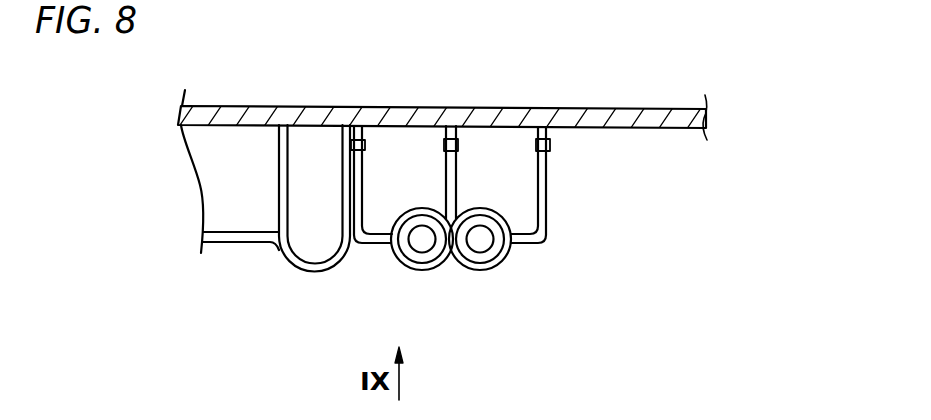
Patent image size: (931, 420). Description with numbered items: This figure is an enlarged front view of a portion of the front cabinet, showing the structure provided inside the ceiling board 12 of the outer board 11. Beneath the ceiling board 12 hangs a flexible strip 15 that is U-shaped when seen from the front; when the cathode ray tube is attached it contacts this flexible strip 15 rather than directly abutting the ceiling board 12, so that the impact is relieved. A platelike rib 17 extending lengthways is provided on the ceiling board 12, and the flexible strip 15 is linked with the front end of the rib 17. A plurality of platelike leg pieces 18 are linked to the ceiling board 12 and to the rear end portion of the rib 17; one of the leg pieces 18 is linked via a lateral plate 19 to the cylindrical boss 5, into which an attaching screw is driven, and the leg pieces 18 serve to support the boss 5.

The cylindrical boss 5 is at (423, 272).
The outer board 11 is at (683, 33).
The ceiling board 12 is at (440, 72).
The flexible strip 15 is at (310, 274).
The platelike rib 17 is at (351, 152).
The platelike leg pieces 18 is at (361, 182).
The lateral plate 19 is at (380, 245).